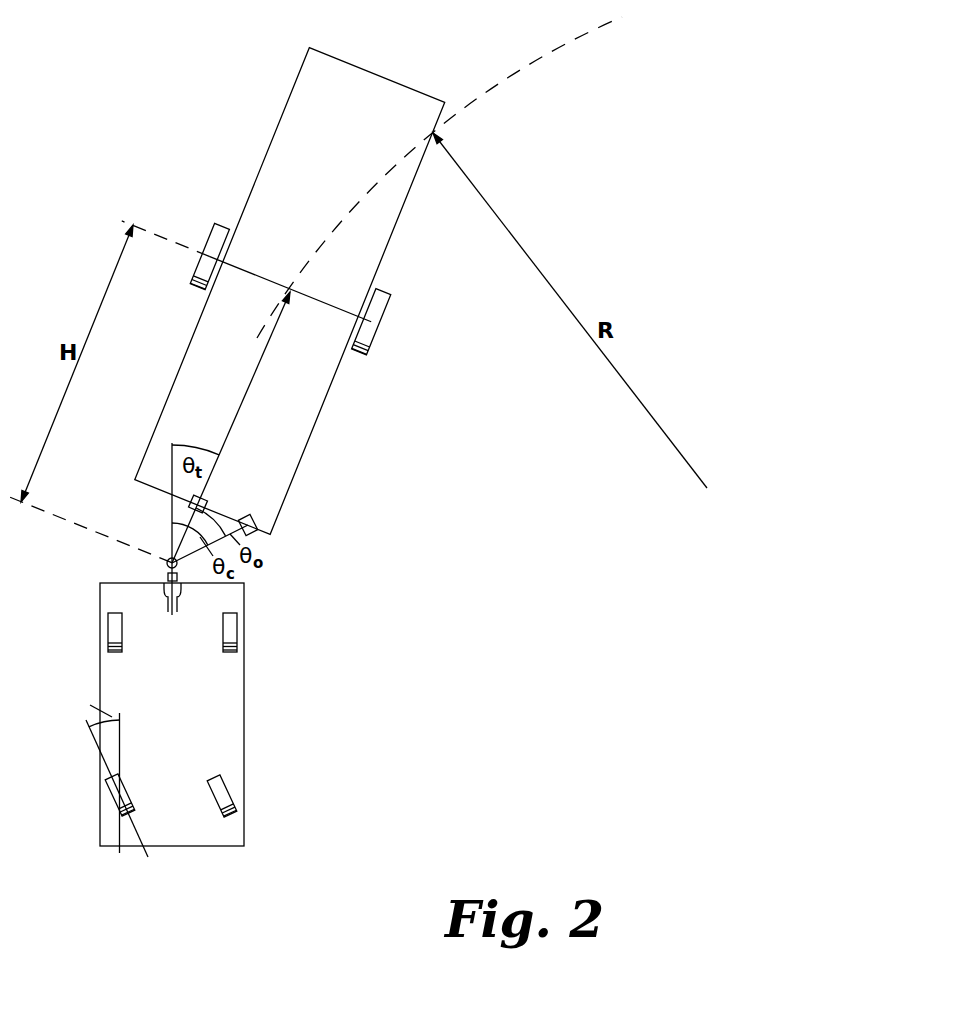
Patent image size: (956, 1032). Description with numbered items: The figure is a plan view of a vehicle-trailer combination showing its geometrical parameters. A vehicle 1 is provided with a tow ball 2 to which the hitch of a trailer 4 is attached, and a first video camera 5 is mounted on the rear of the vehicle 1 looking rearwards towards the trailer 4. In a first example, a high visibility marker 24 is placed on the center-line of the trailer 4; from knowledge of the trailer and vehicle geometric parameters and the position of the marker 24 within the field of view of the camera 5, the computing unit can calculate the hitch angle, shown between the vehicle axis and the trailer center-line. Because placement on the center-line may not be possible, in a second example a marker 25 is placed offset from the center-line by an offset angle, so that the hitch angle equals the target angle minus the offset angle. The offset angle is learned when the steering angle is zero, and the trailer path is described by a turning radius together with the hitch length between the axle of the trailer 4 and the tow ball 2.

The vehicle 1 is at (245, 700).
The tow ball 2 is at (167, 562).
The trailer 4 is at (283, 113).
The first video camera 5 is at (169, 603).
The high visibility marker 24 is at (206, 498).
The marker 25 is at (256, 521).